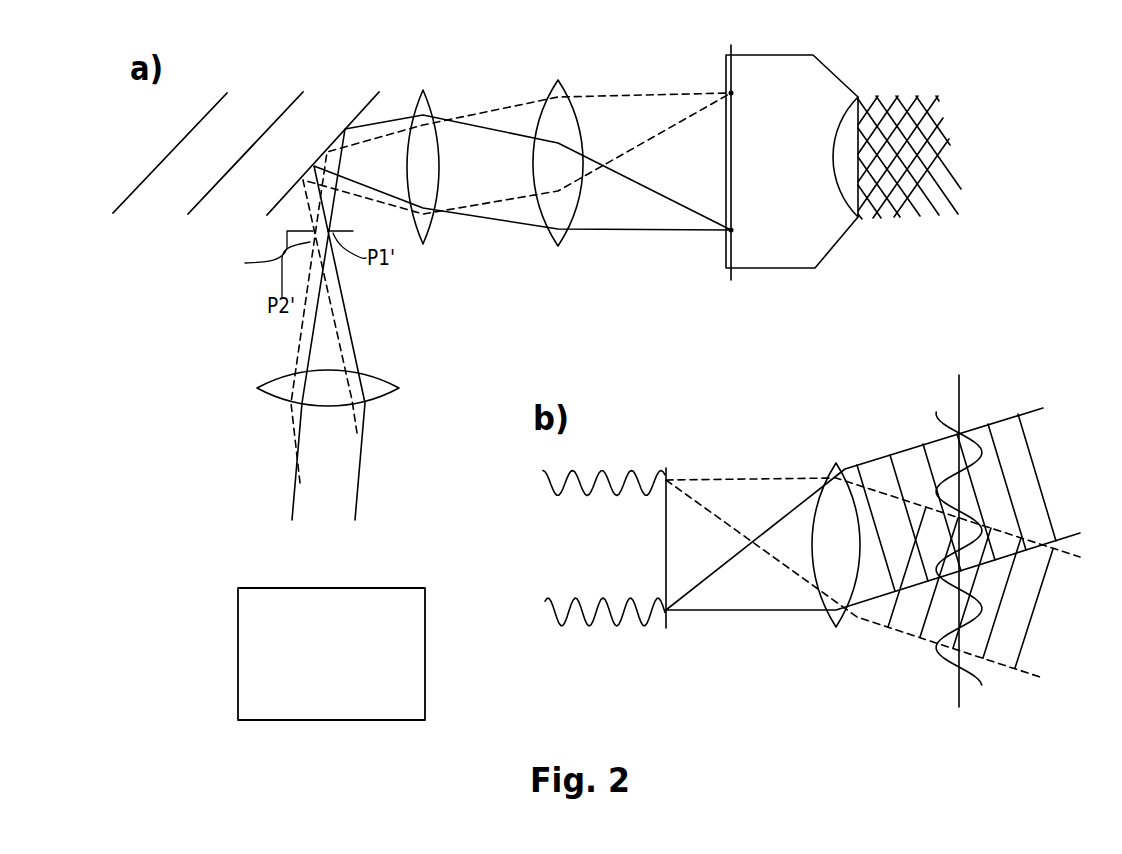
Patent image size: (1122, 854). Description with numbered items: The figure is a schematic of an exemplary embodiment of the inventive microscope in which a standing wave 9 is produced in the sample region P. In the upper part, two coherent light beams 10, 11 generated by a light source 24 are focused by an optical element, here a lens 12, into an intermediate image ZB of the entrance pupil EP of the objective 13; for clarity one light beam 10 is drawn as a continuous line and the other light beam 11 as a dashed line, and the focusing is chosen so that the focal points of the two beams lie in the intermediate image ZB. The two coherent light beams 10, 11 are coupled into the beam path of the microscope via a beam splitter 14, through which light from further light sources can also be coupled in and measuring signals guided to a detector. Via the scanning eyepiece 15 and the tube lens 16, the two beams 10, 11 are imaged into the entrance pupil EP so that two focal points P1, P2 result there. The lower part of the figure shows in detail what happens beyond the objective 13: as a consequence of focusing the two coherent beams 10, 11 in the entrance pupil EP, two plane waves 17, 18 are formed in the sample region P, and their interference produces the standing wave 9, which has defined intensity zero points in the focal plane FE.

The standing wave 9 is at (937, 414).
The coherent light beam 10 is at (292, 500).
The coherent light beam 11 is at (365, 478).
The lens 12 is at (262, 388).
The objective 13 is at (813, 257).
The beam splitter 14 is at (367, 109).
The scanning eyepiece 15 is at (423, 91).
The tube lens 16 is at (558, 81).
The plane wave 17 is at (967, 210).
The plane wave 18 is at (937, 97).
The light source 24 is at (247, 650).
The intermediate image ZB is at (285, 252).
The entrance pupil EP is at (705, 336).
The focal plane FE is at (959, 571).
The sample region P is at (913, 242).
The focal point P1 is at (716, 430).
The focal point P2 is at (715, 285).